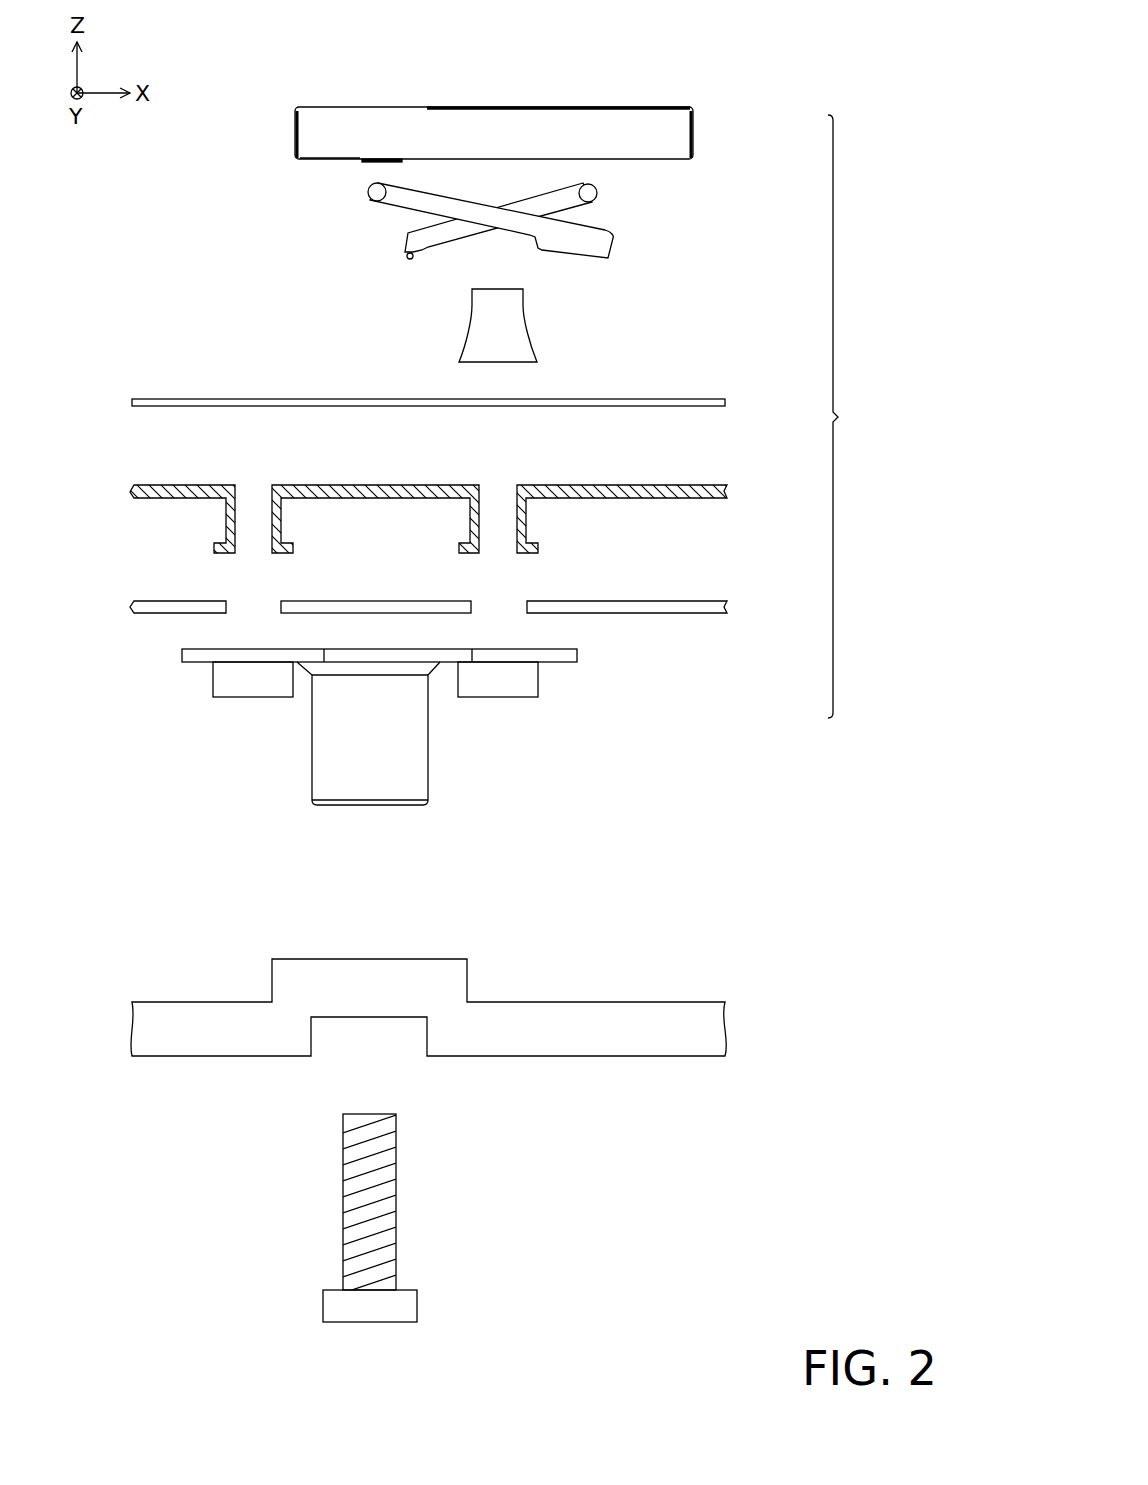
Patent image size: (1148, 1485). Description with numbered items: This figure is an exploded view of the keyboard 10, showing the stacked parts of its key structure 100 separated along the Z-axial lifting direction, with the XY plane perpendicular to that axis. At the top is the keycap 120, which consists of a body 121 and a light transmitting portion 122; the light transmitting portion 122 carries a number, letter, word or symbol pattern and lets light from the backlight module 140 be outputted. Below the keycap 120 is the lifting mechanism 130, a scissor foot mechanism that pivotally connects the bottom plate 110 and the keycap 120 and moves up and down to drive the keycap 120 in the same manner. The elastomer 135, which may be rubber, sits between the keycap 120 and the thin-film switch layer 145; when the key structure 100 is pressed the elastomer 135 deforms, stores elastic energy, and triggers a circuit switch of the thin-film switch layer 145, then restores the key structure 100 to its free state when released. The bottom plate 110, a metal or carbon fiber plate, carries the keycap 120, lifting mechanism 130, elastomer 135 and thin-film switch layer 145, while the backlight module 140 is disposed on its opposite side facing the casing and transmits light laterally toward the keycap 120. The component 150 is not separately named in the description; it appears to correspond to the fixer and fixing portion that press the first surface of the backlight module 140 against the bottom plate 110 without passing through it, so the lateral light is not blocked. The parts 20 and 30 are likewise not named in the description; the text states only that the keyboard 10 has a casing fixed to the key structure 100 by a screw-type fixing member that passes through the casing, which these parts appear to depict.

The keyboard 10 is at (569, 57).
The key structure 100 is at (859, 416).
The bottom plate 110 is at (690, 496).
The keycap 120 is at (658, 133).
The body 121 is at (322, 148).
The light transmitting portion 122 is at (384, 107).
The lifting mechanism 130 is at (597, 243).
The elastomer 135 is at (511, 325).
The backlight module 140 is at (690, 610).
The thin-film switch layer 145 is at (718, 403).
The base with fastening post 150 is at (565, 654).
The casing 20 is at (670, 1029).
The screw 30 is at (398, 1302).